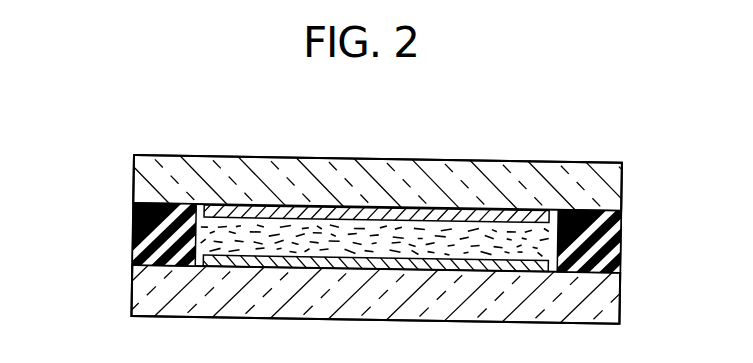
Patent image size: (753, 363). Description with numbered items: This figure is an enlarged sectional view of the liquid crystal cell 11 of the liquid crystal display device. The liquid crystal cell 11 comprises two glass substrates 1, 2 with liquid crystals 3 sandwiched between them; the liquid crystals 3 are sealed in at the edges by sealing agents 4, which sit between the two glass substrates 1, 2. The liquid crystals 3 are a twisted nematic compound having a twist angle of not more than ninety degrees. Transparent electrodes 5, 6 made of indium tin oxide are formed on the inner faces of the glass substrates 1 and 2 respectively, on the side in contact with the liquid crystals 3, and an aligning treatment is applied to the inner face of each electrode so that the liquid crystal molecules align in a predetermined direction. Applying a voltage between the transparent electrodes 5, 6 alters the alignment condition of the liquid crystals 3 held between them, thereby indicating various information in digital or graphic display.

The glass substrate 1 is at (133, 159).
The glass substrate 2 is at (135, 305).
The liquid crystals 3 is at (357, 238).
The sealing agents 4 is at (135, 228).
The transparent electrode 5 is at (240, 205).
The transparent electrode 6 is at (232, 270).
The liquid crystal cell 11 is at (635, 162).